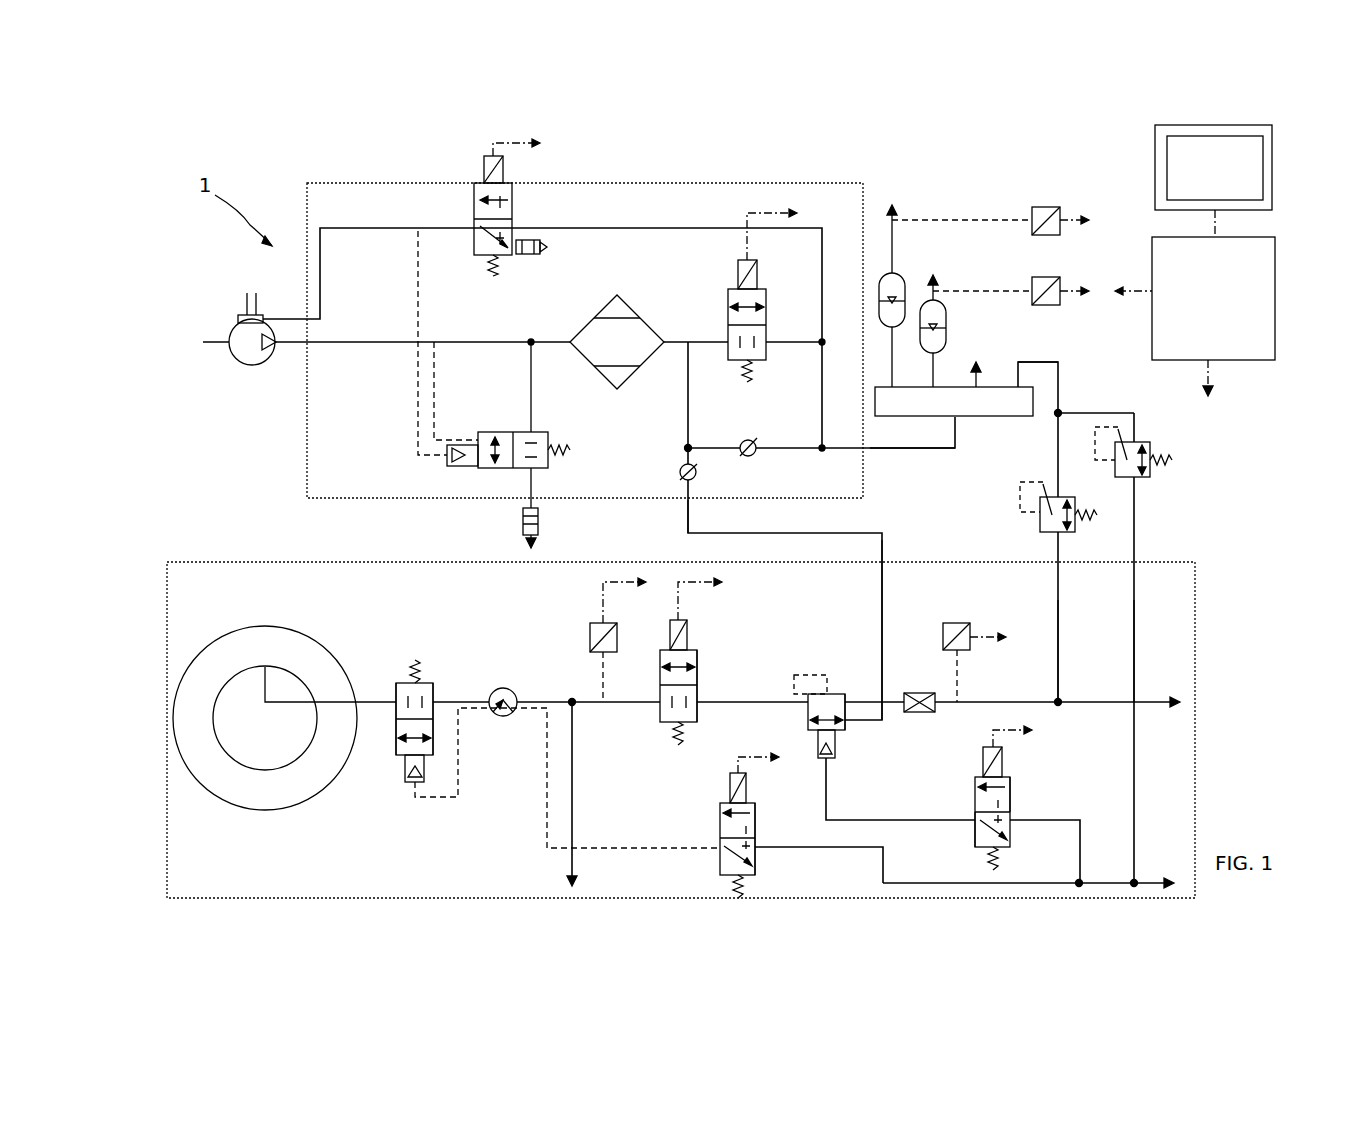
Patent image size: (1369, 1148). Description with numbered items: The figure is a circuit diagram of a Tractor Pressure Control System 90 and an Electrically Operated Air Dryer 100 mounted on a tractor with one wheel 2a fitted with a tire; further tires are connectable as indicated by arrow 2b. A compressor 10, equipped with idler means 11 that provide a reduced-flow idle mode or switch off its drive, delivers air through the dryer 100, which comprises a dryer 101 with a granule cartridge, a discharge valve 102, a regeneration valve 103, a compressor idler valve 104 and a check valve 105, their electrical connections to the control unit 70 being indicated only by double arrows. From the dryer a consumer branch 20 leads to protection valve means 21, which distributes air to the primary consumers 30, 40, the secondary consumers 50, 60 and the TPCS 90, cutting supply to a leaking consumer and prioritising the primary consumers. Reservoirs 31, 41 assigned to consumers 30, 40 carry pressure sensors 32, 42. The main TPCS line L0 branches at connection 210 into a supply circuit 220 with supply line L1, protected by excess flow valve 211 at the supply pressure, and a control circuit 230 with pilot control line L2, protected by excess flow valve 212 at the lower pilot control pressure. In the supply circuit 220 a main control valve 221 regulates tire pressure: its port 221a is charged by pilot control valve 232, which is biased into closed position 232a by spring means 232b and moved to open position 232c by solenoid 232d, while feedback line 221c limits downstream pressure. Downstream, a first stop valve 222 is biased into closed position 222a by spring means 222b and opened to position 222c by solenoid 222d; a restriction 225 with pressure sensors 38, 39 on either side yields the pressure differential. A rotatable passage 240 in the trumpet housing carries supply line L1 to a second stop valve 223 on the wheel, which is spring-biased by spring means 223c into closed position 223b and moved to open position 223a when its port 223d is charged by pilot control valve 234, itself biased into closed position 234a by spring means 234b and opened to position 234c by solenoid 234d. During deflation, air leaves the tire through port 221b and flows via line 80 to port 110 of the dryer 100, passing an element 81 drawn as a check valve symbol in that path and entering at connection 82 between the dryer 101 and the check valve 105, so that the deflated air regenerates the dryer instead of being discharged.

The compressor 10 is at (277, 362).
The idler means 11 is at (237, 315).
The consumer branch 20 is at (885, 450).
The protection valve means 21 is at (972, 418).
The consumer 30 is at (885, 275).
The reservoir 31 is at (878, 280).
The pressure sensor 32 is at (1046, 210).
The pressure sensor 38 is at (590, 632).
The second pressure sensor 39 is at (943, 626).
The consumer 40 is at (928, 310).
The reservoir 41 is at (930, 335).
The pressure sensor 42 is at (1046, 282).
The consumer 50 is at (968, 365).
The consumer 60 is at (1010, 380).
The control unit 70 is at (1152, 255).
The line 80 is at (885, 552).
The check valve 81 is at (682, 470).
The connection 82 is at (688, 447).
The Tractor Pressure Control System 90 is at (245, 562).
The Electrically Operated Air Dryer 100 is at (395, 183).
The dryer 101 is at (592, 330).
The discharge valve 102 is at (478, 466).
The regeneration valve 103 is at (728, 297).
The compressor idler valve 104 is at (475, 213).
The check valve 105 is at (753, 441).
The port 110 is at (686, 512).
The wheel 2a is at (222, 673).
The arrow 2b is at (568, 873).
The main TPCS line L0 is at (1048, 362).
The supply line L1 is at (1030, 700).
The pilot control line L2 is at (1136, 500).
The connection 210 is at (1063, 413).
The excess flow valve 211 is at (1050, 518).
The excess flow valve 212 is at (1128, 457).
The supply circuit 220 is at (1058, 640).
The main control valve 221 is at (808, 712).
The port 221a is at (832, 755).
The port 221b is at (840, 700).
The line 221c is at (800, 675).
The first stop valve 222 is at (660, 710).
The closed position 222a is at (697, 700).
The spring means 222b is at (677, 740).
The open position 222c is at (697, 657).
The solenoid 222d is at (682, 622).
The second stop valve 223 is at (396, 752).
The open position 223a is at (433, 750).
The closed position 223b is at (396, 703).
The spring means 223c is at (424, 666).
The port 223d is at (422, 790).
The restriction 225 is at (912, 694).
The control circuit 230 is at (1136, 645).
The pilot control valve 232 is at (975, 785).
The closed position 232a is at (985, 835).
The spring means 232b is at (1000, 880).
The open position 232c is at (1005, 792).
The solenoid 232d is at (995, 756).
The pilot control valve 234 is at (720, 858).
The closed position 234a is at (755, 855).
The spring means 234b is at (735, 895).
The open position 234c is at (755, 826).
The solenoid 234d is at (720, 818).
The rotatable passage 240 is at (501, 688).